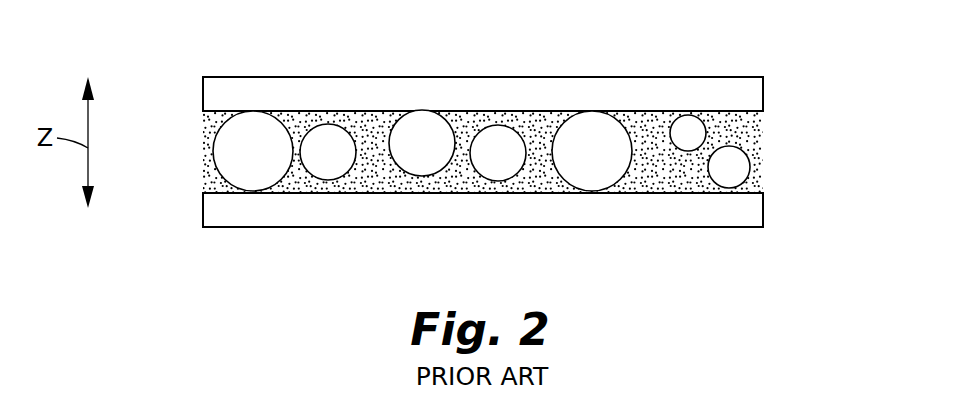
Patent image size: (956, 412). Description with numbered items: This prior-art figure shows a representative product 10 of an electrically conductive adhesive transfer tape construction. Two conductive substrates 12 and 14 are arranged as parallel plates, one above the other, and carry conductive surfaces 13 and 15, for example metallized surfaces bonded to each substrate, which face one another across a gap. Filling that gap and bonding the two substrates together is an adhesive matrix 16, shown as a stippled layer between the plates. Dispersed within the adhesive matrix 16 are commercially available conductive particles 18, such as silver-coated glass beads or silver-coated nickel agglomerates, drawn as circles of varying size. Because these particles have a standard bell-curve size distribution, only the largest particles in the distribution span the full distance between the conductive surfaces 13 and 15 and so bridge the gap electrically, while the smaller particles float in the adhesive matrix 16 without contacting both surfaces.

The representative product 10 is at (479, 149).
The conductive substrate 12 is at (563, 89).
The conductive surface 13 is at (222, 113).
The conductive substrate 14 is at (563, 212).
The conductive surface 15 is at (215, 188).
The adhesive matrix 16 is at (475, 197).
The conductive particles 18 is at (698, 131).